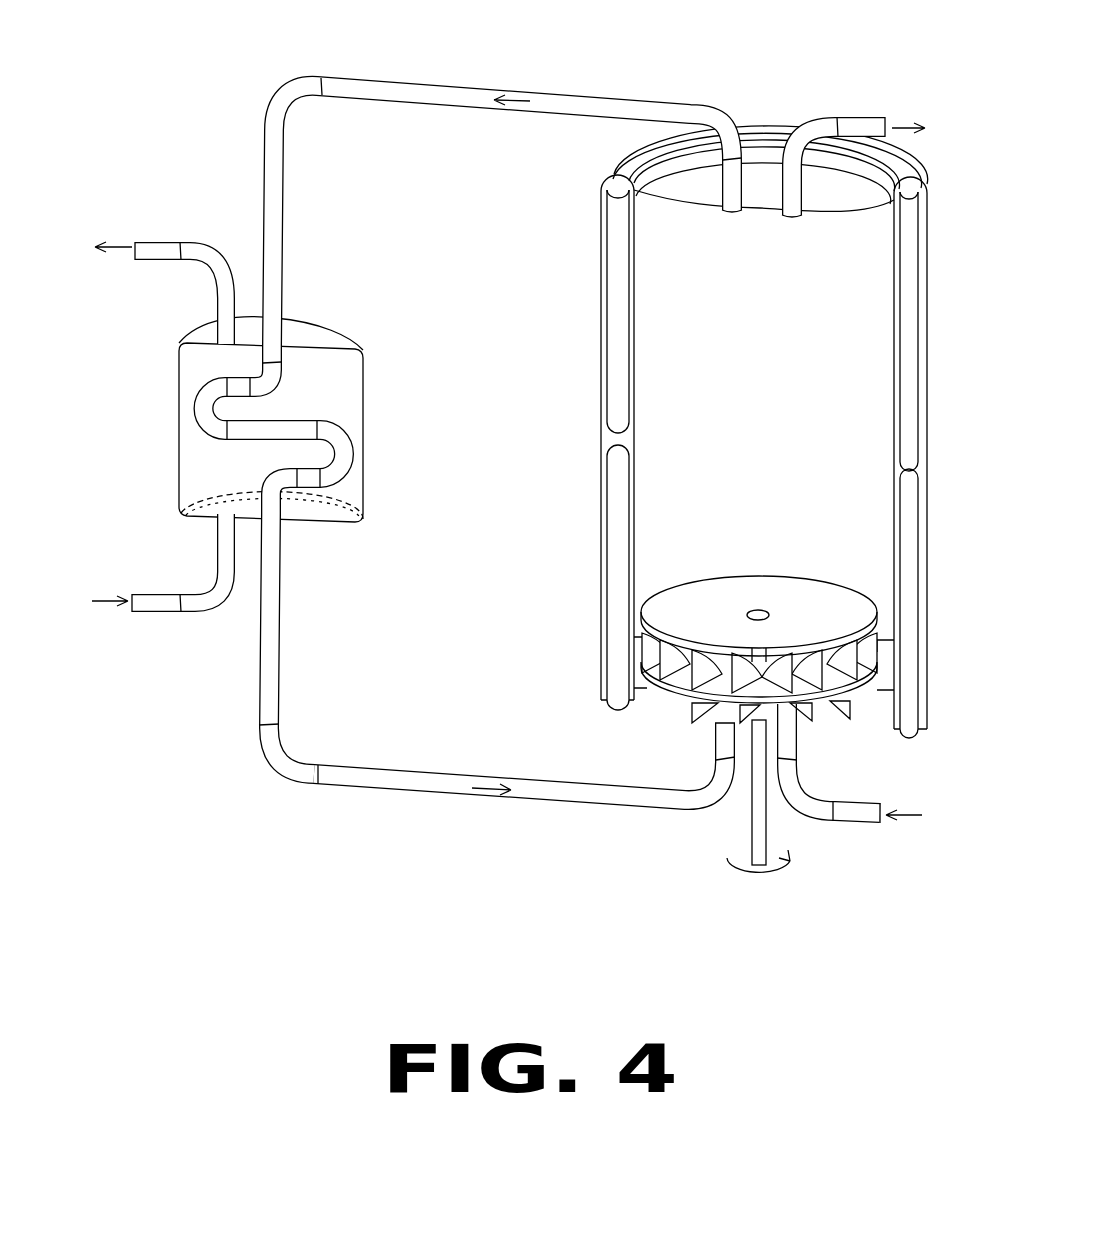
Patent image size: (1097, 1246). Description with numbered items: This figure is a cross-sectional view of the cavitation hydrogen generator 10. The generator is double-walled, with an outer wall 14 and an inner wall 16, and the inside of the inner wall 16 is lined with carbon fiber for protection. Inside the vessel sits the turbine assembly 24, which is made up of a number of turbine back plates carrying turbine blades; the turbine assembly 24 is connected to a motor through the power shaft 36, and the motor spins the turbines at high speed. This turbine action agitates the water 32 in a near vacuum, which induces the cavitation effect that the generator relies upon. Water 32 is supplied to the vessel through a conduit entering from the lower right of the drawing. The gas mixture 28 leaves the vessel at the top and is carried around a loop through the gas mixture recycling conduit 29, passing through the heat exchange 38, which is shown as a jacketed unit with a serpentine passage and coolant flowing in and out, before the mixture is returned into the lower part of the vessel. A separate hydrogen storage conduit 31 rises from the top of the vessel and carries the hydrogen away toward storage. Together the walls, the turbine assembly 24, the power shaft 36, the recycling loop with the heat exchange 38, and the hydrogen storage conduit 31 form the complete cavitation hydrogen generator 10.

The cavitation hydrogen generator 10 is at (704, 432).
The outer wall 14 is at (601, 382).
The inner wall 16 is at (633, 513).
The turbine assembly 24 is at (724, 603).
The gas mixture 28 is at (517, 98).
The gas mixture recycling conduit 29 is at (259, 701).
The hydrogen storage conduit 31 is at (813, 128).
The water 32 is at (915, 817).
The power shaft 36 is at (487, 792).
The heat exchange 38 is at (333, 515).